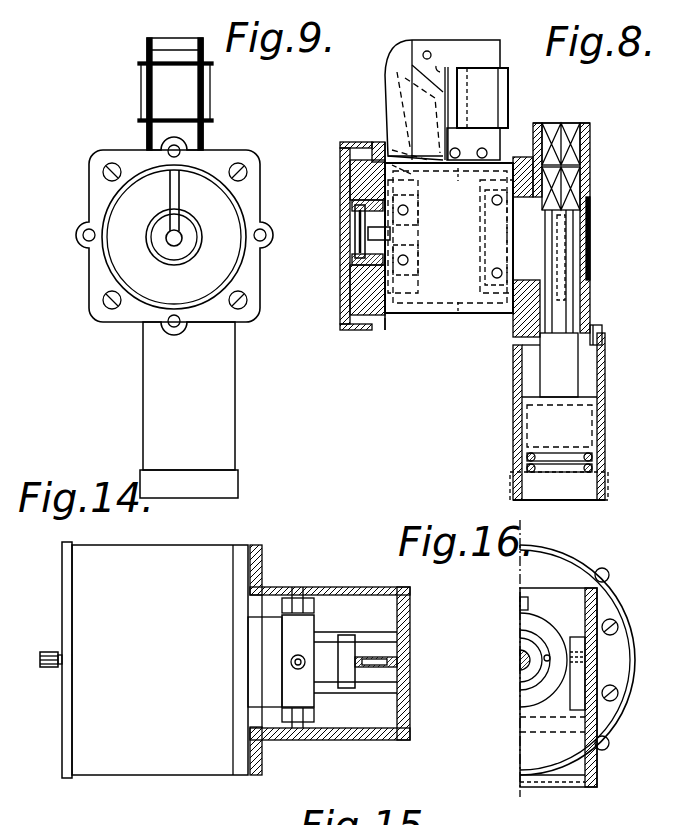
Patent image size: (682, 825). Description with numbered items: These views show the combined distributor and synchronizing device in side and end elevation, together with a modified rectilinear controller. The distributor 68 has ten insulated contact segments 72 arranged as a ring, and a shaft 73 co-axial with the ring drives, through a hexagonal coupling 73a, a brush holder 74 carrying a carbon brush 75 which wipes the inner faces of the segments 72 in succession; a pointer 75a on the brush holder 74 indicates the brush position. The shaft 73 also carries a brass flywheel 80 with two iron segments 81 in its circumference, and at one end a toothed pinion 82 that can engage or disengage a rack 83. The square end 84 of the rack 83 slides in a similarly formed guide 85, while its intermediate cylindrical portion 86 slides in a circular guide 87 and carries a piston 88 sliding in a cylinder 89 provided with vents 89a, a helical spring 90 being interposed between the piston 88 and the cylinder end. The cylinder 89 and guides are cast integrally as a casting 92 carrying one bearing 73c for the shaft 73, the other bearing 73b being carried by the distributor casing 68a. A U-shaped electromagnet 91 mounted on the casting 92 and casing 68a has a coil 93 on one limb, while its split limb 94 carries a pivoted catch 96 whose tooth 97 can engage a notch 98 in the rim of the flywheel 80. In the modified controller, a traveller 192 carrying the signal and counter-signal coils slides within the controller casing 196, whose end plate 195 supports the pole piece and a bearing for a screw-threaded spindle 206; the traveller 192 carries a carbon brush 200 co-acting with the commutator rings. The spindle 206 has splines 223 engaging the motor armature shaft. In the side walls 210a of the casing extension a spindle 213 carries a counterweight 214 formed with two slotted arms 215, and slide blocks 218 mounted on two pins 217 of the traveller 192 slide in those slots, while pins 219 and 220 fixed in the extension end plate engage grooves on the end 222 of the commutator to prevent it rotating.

In FIG. 8, the distributor 68 is at (372, 296).
In FIG. 9, the distributor casing 68a is at (247, 214).
In FIG. 8, the distributor casing 68a is at (379, 325).
In FIG. 8, the contact segments 72 is at (375, 205).
In FIG. 8, the shaft 73 is at (420, 247).
In FIG. 8, the hexagonal coupling 73a is at (420, 232).
In FIG. 8, the bearing 73b is at (420, 266).
In FIG. 8, the bearing 73c is at (480, 240).
In FIG. 9, the brush holder 74 is at (196, 238).
In FIG. 8, the brush holder 74 is at (375, 248).
In FIG. 8, the carbon brush 75 is at (357, 222).
In FIG. 9, the pointer 75a is at (181, 198).
In FIG. 8, the flywheel 80 is at (462, 318).
In FIG. 8, the iron segments 81 is at (424, 330).
In FIG. 8, the toothed pinion 82 is at (565, 232).
In FIG. 8, the rack 83 is at (576, 268).
In FIG. 8, the square end of rack 84 is at (585, 178).
In FIG. 8, the guide 85 is at (590, 137).
In FIG. 8, the intermediate cylindrical portion 86 is at (559, 365).
In FIG. 8, the guide 87 is at (590, 297).
In FIG. 8, the piston 88 is at (559, 426).
In FIG. 9, the cylinder 89 is at (189, 410).
In FIG. 8, the cylinder 89 is at (590, 380).
In FIG. 8, the vents 89a is at (590, 332).
In FIG. 8, the helical spring 90 is at (594, 457).
In FIG. 8, the U-shaped electromagnet 91 is at (503, 44).
In FIG. 8, the casting 92 is at (531, 336).
In FIG. 9, the coil 93 is at (213, 88).
In FIG. 8, the coil 93 is at (508, 88).
In FIG. 8, the split limb 94 is at (440, 60).
In FIG. 8, the catch 96 is at (416, 119).
In FIG. 8, the tooth 97 is at (398, 142).
In FIG. 8, the notch 98 is at (413, 175).
In FIG. 14, the traveller 192 is at (256, 642).
In FIG. 16, the traveller 192 is at (523, 619).
In FIG. 14, the end plate 195 is at (62, 708).
In FIG. 14, the controller casing 196 is at (241, 660).
In FIG. 16, the controller casing 196 is at (578, 545).
In FIG. 14, the carbon brush 200 is at (284, 662).
In FIG. 14, the screw-threaded spindle 206 is at (395, 662).
In FIG. 16, the screw-threaded spindle 206 is at (522, 662).
In FIG. 16, the side walls 210a is at (598, 707).
In FIG. 16, the spindle 213 is at (543, 728).
In FIG. 16, the counterweight 214 is at (558, 687).
In FIG. 14, the arms 215 is at (314, 606).
In FIG. 16, the arms 215 is at (578, 676).
In FIG. 16, the pins 217 is at (590, 655).
In FIG. 14, the slide blocks 218 is at (298, 597).
In FIG. 14, the pin 219 is at (395, 637).
In FIG. 14, the pin 220 is at (395, 690).
In FIG. 16, the pin 220 is at (549, 654).
In FIG. 14, the end of commutator 222 is at (347, 636).
In FIG. 16, the end of commutator 222 is at (538, 630).
In FIG. 14, the splines 223 is at (42, 651).